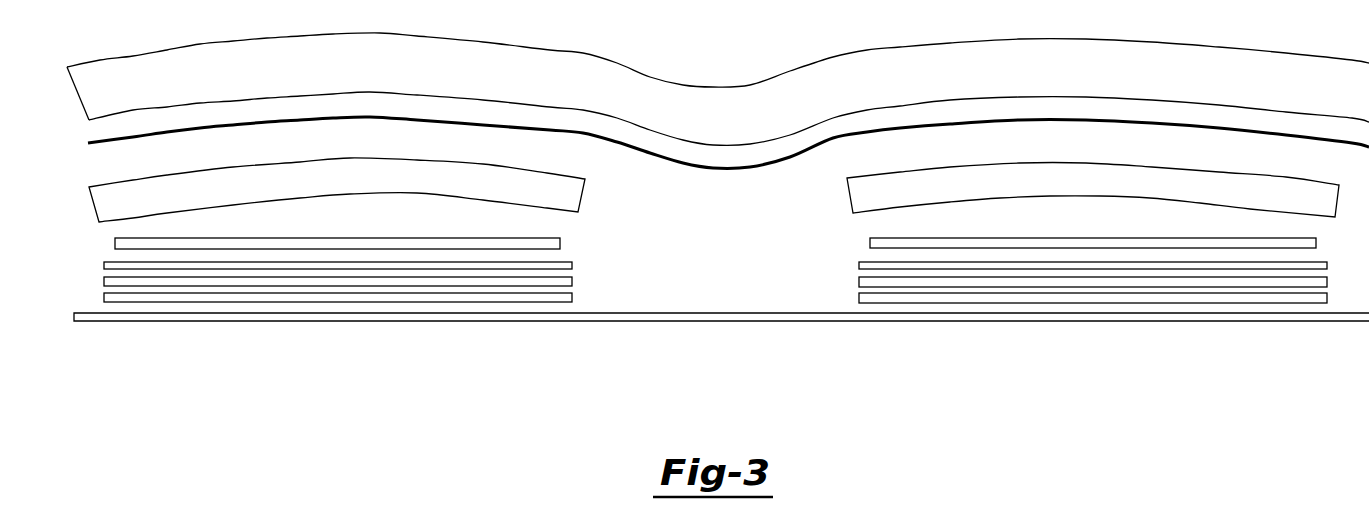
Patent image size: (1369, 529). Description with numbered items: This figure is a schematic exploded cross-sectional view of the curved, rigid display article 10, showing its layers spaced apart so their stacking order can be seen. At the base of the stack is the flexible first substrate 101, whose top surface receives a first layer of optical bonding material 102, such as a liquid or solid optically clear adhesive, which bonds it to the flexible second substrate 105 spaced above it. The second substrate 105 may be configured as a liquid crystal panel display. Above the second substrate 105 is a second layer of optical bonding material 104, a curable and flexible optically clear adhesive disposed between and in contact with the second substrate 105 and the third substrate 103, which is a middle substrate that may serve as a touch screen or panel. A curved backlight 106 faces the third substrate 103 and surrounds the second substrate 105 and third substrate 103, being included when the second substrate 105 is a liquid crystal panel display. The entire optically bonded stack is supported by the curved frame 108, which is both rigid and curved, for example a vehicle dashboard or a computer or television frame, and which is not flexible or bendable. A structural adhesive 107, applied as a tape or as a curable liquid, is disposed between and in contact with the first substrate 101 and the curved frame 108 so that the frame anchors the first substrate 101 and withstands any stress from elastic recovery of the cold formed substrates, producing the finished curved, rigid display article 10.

The curved, rigid display article 10 is at (66, 57).
The first substrate 101 is at (698, 321).
The optical bonding material 102 is at (202, 298).
The third substrate 103 is at (273, 283).
The second layer of optical bonding material 104 is at (318, 270).
The second substrate 105 is at (359, 243).
The curved backlight 106 is at (393, 187).
The structural adhesive 107 is at (430, 117).
The curved frame 108 is at (477, 92).